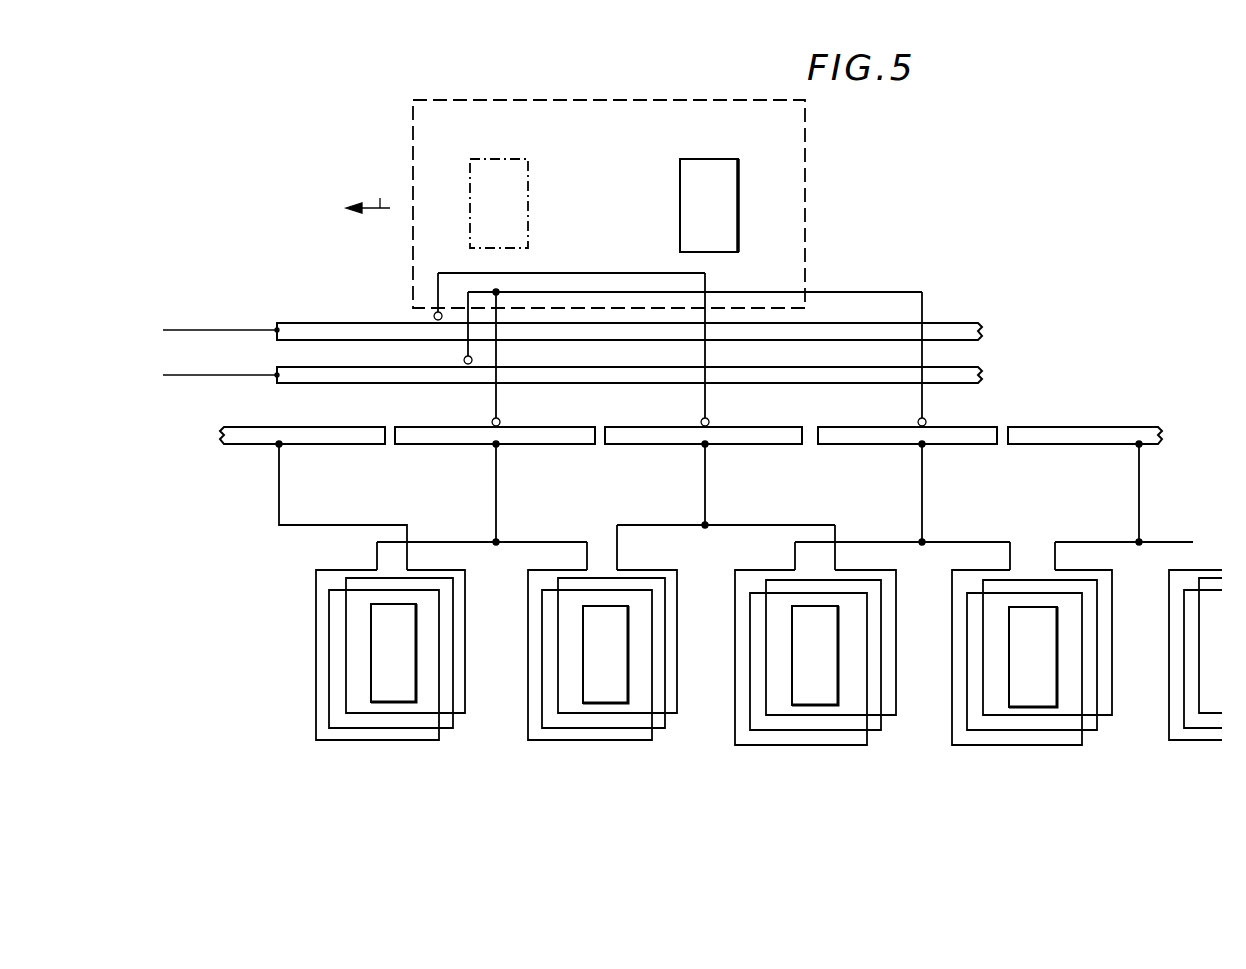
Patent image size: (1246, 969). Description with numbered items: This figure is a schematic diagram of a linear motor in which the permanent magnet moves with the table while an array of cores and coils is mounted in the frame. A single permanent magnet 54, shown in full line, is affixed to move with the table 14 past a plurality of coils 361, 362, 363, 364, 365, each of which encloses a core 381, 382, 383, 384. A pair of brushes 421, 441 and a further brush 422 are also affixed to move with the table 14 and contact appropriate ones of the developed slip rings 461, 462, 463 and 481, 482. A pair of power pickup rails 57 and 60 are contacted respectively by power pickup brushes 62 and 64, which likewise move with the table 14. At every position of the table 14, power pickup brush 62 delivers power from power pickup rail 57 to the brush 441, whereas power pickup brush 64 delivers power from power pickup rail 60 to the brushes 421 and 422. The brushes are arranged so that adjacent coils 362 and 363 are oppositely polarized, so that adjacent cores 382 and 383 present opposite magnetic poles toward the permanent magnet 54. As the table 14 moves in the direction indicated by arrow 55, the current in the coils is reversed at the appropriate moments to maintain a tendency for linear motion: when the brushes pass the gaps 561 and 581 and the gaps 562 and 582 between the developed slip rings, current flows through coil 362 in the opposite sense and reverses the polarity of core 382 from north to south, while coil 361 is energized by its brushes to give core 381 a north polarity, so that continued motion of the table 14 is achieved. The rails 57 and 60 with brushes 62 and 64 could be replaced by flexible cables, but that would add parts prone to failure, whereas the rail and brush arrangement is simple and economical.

The table 14 is at (806, 167).
The permanent magnet 54 is at (529, 177).
The arrow 55 is at (368, 196).
The power pickup rail 57 is at (314, 323).
The power pickup rail 60 is at (302, 384).
The power pickup brush 62 is at (433, 317).
The power pickup brush 64 is at (463, 357).
The brush 421 is at (503, 420).
The brush 422 is at (928, 421).
The brush 441 is at (712, 421).
The developed slip ring 461 is at (350, 445).
The developed slip ring 462 is at (762, 445).
The developed slip ring 463 is at (1085, 444).
The developed slip ring 481 is at (540, 445).
The developed slip ring 482 is at (968, 445).
The gap 561 is at (390, 424).
The gap 562 is at (812, 426).
The gap 581 is at (600, 425).
The gap 582 is at (1003, 429).
The coil 361 is at (316, 725).
The coil 362 is at (528, 735).
The coil 363 is at (733, 735).
The coil 364 is at (952, 733).
The coil 365 is at (1168, 722).
The core 381 is at (378, 678).
The core 382 is at (592, 660).
The core 383 is at (797, 665).
The core 384 is at (1012, 683).